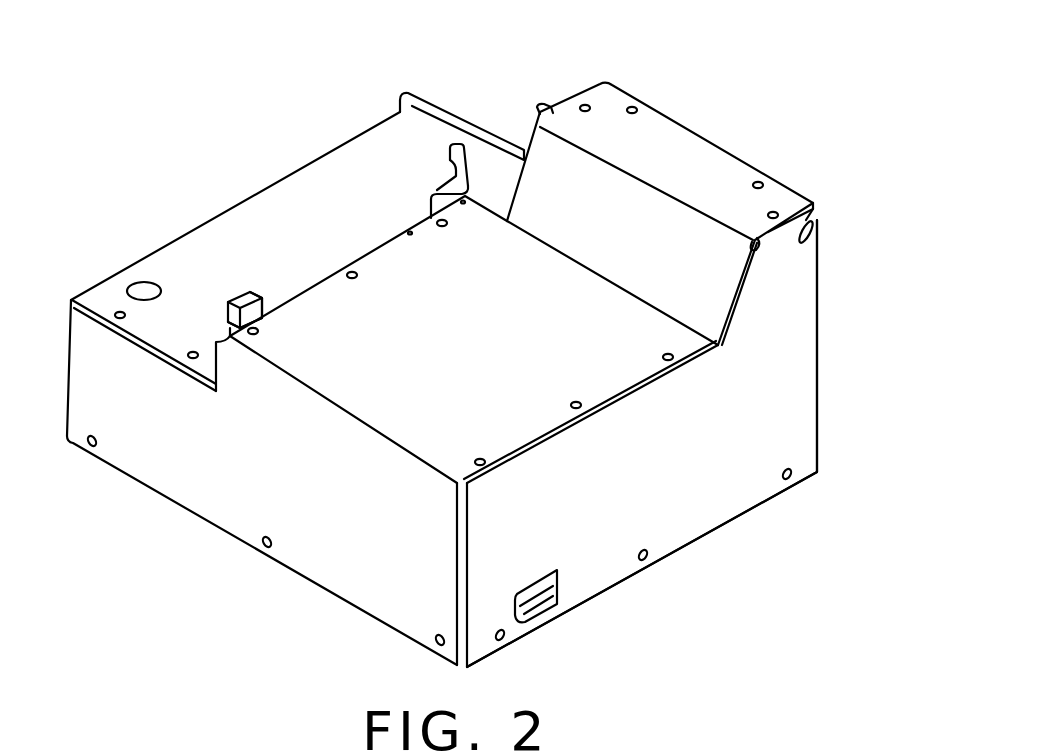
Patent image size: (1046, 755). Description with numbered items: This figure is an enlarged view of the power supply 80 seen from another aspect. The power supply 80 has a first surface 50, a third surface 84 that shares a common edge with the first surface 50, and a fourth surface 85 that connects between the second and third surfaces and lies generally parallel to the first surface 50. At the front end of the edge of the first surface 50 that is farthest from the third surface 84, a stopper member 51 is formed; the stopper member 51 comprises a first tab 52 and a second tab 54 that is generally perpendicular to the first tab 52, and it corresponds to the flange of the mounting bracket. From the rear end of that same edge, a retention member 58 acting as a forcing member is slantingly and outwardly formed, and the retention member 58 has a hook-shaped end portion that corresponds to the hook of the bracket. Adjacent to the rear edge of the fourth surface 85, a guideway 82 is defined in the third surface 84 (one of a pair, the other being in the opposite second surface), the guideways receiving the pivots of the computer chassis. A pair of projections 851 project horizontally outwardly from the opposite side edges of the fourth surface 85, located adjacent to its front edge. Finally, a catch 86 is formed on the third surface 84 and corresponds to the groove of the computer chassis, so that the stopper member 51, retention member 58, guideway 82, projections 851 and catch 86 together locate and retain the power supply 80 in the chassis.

The first surface 50 is at (402, 293).
The stopper member 51 is at (228, 314).
The first tab 52 is at (230, 303).
The second tab 54 is at (252, 295).
The retention member 58 is at (455, 143).
The power supply 80 is at (692, 180).
The guideway 82 is at (817, 221).
The third surface 84 is at (642, 454).
The fourth surface 85 is at (648, 120).
The projection 851 is at (547, 104).
The catch 86 is at (545, 605).